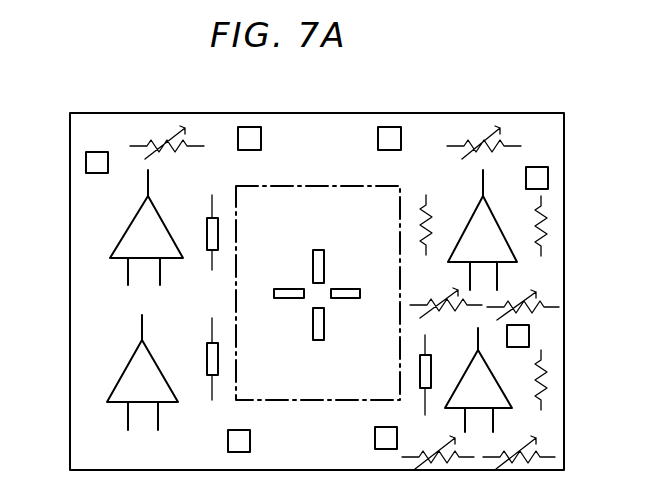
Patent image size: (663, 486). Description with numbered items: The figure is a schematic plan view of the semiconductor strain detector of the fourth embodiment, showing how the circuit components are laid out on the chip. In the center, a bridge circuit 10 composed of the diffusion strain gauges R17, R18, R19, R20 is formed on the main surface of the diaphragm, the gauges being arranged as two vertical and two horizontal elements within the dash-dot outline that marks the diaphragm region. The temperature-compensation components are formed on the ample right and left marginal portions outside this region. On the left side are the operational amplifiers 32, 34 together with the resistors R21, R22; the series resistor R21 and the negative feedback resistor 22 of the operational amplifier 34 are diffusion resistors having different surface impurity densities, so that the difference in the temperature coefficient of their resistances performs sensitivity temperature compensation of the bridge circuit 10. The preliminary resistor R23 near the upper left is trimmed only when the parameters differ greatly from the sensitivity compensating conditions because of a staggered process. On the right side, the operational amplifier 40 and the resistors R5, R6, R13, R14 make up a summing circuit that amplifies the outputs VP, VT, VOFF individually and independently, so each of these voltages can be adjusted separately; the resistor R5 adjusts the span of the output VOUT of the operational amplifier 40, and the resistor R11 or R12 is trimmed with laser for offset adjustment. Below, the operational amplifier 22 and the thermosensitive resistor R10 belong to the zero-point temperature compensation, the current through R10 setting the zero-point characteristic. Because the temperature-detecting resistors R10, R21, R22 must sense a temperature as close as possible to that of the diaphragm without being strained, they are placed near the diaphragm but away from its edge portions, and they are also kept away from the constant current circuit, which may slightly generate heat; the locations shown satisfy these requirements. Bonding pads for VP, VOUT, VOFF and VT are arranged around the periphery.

The bridge circuit 10 is at (270, 400).
The negative feedback resistor 22 is at (505, 390).
The operational amplifier 32 is at (126, 364).
The operational amplifier 34 is at (127, 228).
The operational amplifier 40 is at (509, 236).
The resistor R5 is at (513, 136).
The resistor R6 is at (440, 225).
The thermosensitive resistor R10 is at (431, 372).
The resistor R11 is at (436, 302).
The resistor R12 is at (544, 300).
The resistor R13 is at (545, 235).
The resistor R14 is at (550, 370).
The diffusion strain gauge R17 is at (318, 250).
The diffusion strain gauge R18 is at (345, 298).
The diffusion strain gauge R19 is at (292, 289).
The diffusion strain gauge R20 is at (320, 340).
The series resistor R21 is at (207, 360).
The resistor R22 is at (207, 225).
The preliminary resistor R23 is at (165, 140).
The output VP is at (86, 163).
The output VOUT is at (548, 179).
The output VOFF is at (529, 336).
The output VT is at (375, 438).